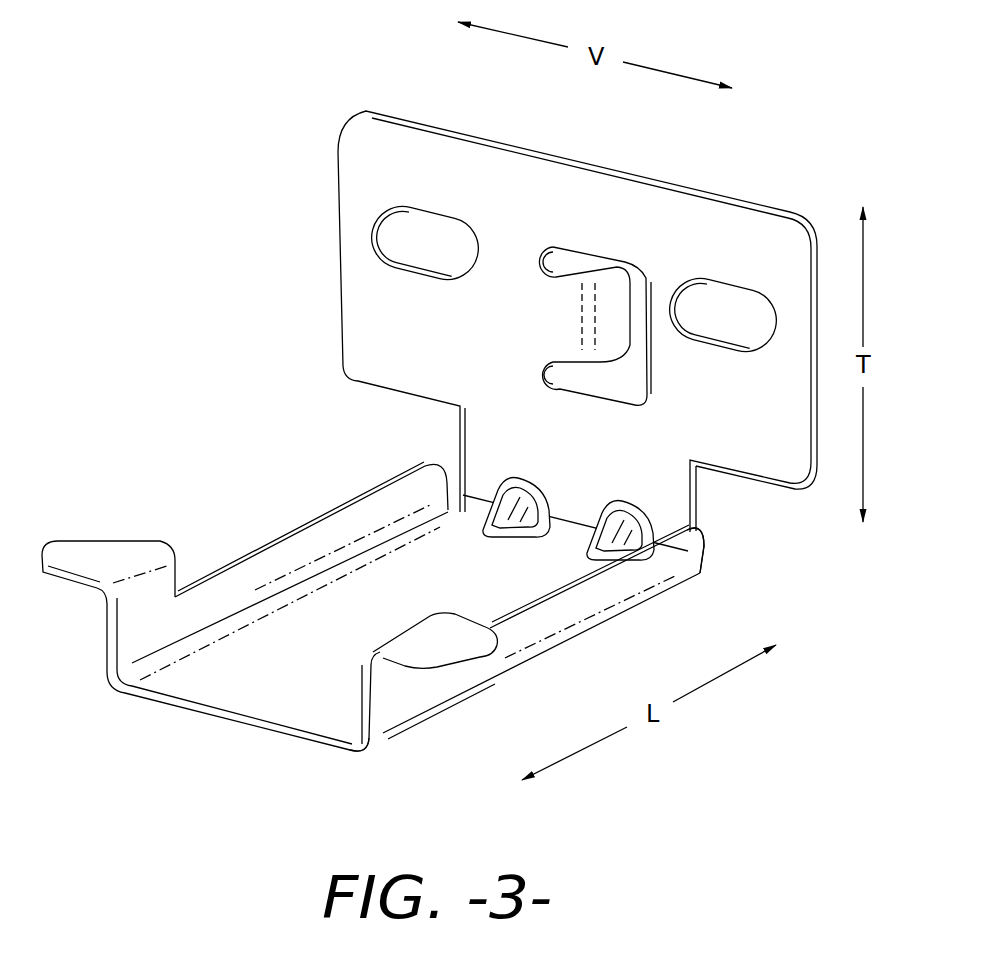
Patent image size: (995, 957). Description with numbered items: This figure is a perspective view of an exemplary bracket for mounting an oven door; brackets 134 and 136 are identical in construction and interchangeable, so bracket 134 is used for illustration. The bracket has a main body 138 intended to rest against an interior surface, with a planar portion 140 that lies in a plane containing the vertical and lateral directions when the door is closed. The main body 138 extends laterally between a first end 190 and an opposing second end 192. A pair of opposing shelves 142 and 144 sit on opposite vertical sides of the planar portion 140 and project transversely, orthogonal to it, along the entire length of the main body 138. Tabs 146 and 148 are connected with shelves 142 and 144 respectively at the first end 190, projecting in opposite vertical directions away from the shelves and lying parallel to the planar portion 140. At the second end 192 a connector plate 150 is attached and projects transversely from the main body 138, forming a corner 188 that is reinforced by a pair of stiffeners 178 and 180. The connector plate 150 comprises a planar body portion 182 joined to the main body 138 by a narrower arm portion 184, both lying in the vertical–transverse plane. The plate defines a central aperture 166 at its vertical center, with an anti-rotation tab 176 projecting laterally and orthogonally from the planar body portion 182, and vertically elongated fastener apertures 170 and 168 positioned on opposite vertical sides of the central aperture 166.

The bracket 134 is at (417, 435).
The bracket 136 is at (256, 121).
The main body 138 is at (338, 610).
The planar portion 140 is at (318, 668).
The shelf 142 is at (597, 598).
The shelf 144 is at (340, 531).
The tab 146 is at (437, 642).
The tab 148 is at (105, 554).
The connector plate 150 is at (338, 131).
The central aperture 166 is at (653, 288).
The aperture 168 is at (732, 307).
The fastener aperture 170 is at (432, 234).
The anti-rotation tab 176 is at (612, 292).
The stiffener 178 is at (517, 497).
The stiffener 180 is at (621, 529).
The planar body portion 182 is at (528, 206).
The arm portion 184 is at (597, 475).
The corner 188 is at (476, 506).
The first end 190 is at (376, 757).
The second end 192 is at (705, 586).